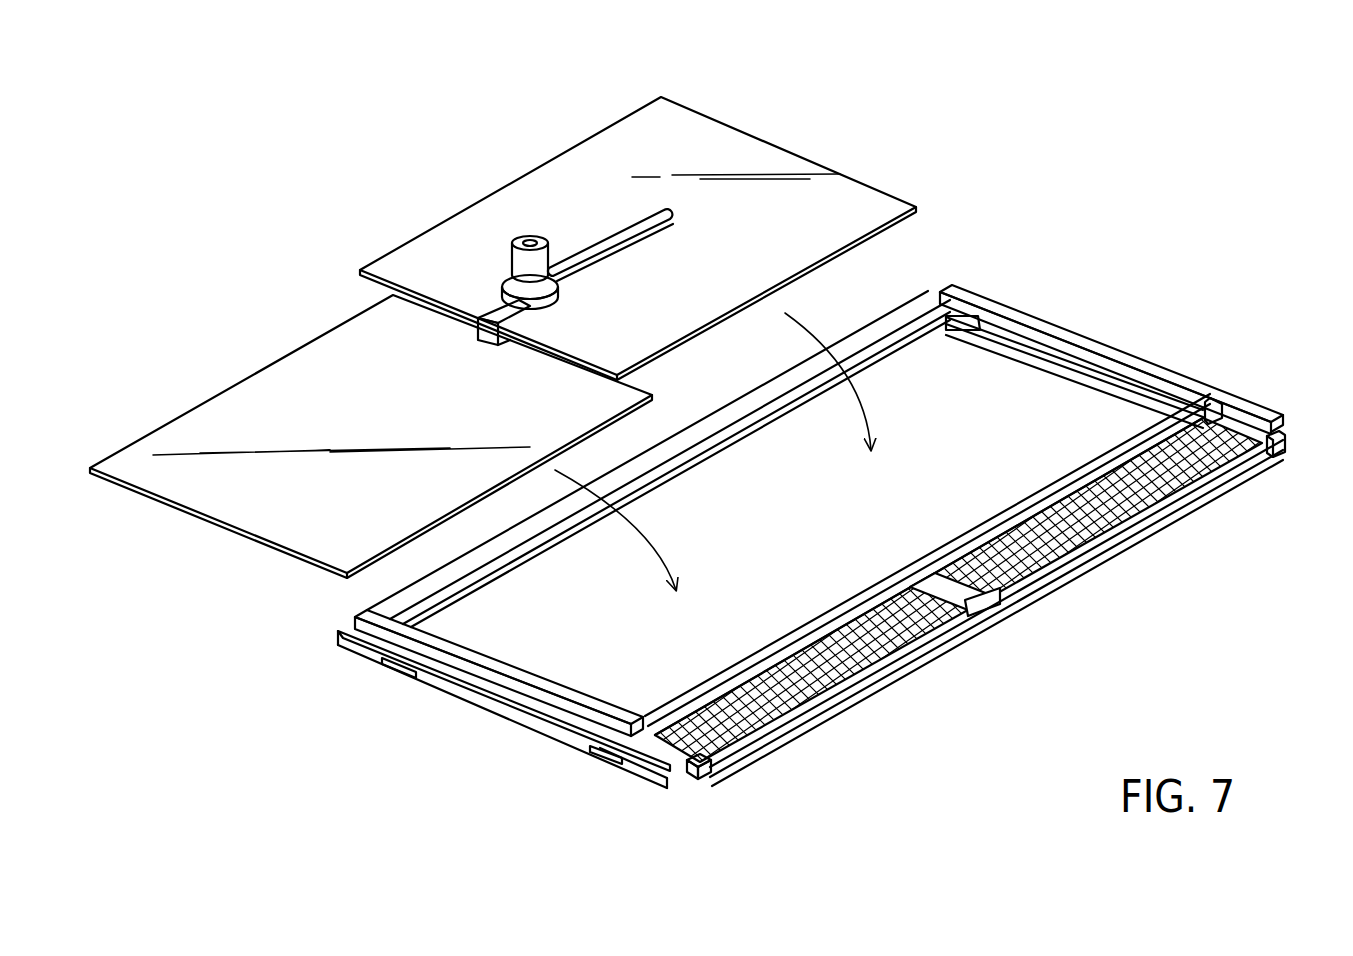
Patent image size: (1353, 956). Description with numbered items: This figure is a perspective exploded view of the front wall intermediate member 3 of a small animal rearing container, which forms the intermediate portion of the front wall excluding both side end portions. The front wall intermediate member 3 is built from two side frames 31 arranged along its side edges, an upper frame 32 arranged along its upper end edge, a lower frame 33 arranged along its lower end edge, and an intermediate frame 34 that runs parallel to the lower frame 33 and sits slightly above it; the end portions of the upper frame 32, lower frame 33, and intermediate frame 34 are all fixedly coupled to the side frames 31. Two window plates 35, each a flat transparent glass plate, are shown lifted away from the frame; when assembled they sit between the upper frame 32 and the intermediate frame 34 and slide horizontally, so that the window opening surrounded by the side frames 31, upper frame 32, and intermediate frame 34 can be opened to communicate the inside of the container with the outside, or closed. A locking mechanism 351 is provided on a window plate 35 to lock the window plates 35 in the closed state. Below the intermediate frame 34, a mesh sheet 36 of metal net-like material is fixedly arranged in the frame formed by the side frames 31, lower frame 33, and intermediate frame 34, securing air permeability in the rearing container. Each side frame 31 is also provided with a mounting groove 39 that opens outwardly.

The front wall intermediate member 3 is at (1052, 234).
The side frame 31 is at (1136, 372).
The upper frame 32 is at (748, 410).
The lower frame 33 is at (1080, 562).
The intermediate frame 34 is at (843, 603).
The window plate 35 is at (742, 150).
The locking mechanism 351 is at (538, 240).
The mesh sheet 36 is at (1093, 478).
The mounting groove 39 is at (462, 697).